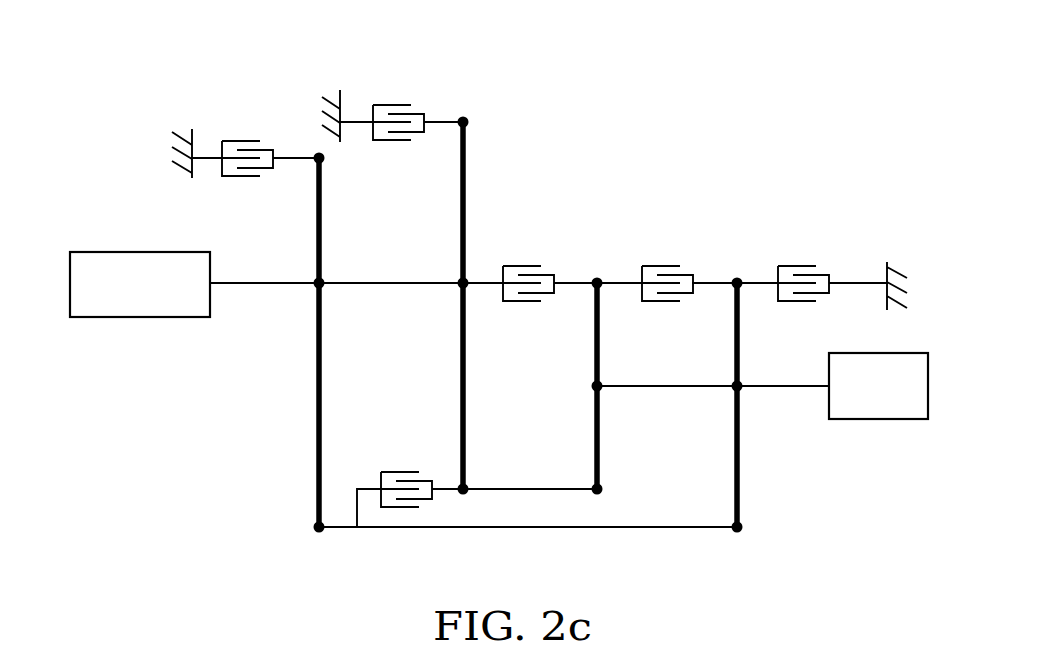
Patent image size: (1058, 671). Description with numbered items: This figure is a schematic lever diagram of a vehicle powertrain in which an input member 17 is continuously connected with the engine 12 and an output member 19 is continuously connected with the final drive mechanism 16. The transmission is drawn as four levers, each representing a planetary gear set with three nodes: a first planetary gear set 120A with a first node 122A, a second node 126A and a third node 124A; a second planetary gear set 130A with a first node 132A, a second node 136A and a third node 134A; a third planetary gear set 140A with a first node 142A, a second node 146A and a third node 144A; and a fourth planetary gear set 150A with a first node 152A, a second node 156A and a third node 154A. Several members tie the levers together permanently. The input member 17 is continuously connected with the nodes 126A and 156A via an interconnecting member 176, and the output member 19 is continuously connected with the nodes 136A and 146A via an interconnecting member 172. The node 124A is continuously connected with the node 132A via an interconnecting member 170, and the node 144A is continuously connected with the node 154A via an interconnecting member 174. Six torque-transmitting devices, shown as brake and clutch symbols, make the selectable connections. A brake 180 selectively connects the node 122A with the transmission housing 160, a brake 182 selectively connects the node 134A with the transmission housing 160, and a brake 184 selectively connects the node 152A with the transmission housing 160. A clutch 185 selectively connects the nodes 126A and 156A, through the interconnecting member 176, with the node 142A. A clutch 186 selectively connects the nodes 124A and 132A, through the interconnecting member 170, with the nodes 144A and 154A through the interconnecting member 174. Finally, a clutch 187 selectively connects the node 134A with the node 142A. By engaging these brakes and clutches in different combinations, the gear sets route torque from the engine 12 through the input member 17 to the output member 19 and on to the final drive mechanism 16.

The engine 12 is at (128, 229).
The final drive mechanism 16 is at (876, 440).
The input member 17 is at (281, 282).
The output member 19 is at (788, 388).
The first planetary gear set 120A is at (318, 552).
The first node 122A is at (330, 165).
The third node 124A is at (307, 519).
The second node 126A is at (311, 289).
The second planetary gear set 130A is at (739, 264).
The first node 132A is at (750, 529).
The third node 134A is at (727, 292).
The second node 136A is at (727, 391).
The third planetary gear set 140A is at (599, 264).
The first node 142A is at (590, 290).
The third node 144A is at (605, 491).
The second node 146A is at (595, 390).
The fourth planetary gear set 150A is at (466, 104).
The first node 152A is at (470, 123).
The third node 154A is at (467, 486).
The second node 156A is at (455, 289).
The transmission housing 160 is at (172, 132).
The interconnecting member 170 is at (612, 528).
The interconnecting member 172 is at (659, 384).
The interconnecting member 174 is at (553, 491).
The interconnecting member 176 is at (415, 282).
The brake 180 is at (274, 182).
The brake 182 is at (825, 262).
The brake 184 is at (425, 100).
The clutch 185 is at (545, 262).
The clutch 186 is at (429, 466).
The clutch 187 is at (689, 262).